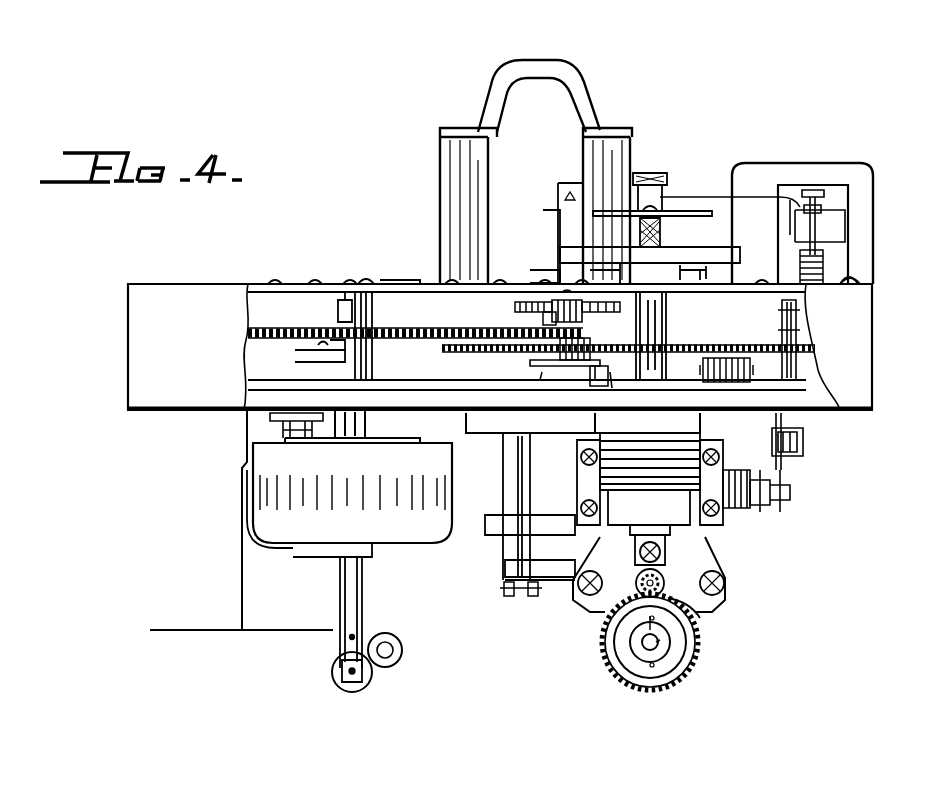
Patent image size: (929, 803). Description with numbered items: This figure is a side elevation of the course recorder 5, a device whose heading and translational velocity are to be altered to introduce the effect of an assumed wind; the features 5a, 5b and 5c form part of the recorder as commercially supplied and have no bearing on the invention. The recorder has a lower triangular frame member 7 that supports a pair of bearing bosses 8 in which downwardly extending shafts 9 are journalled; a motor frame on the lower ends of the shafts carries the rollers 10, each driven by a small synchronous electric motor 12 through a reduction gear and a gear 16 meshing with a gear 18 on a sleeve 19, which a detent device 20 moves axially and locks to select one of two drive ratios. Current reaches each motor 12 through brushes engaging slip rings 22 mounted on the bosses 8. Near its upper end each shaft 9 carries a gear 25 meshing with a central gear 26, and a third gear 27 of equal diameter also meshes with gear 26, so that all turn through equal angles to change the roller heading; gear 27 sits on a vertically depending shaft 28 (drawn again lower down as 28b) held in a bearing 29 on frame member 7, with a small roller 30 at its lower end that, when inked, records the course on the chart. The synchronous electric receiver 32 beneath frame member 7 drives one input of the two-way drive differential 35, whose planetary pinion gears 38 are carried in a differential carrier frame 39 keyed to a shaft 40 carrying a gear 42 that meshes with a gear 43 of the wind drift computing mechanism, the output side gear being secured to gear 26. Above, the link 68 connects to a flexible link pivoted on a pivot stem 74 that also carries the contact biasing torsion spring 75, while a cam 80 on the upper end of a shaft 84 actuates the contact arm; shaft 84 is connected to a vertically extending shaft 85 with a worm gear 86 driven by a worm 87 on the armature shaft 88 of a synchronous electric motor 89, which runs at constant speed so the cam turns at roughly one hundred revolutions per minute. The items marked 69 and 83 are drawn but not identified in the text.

The course recorder 5 is at (291, 270).
The commercial recorder structure 5a is at (590, 72).
The commercial recorder structure 5b is at (253, 477).
The commercial recorder structure 5c is at (408, 278).
The lower triangular frame member 7 is at (808, 405).
The bearing boss 8 is at (608, 433).
The downwardly extending shaft 9 is at (662, 316).
The roller 10 is at (700, 642).
The synchronous electric motor 12 is at (718, 552).
The gear 16 is at (662, 582).
The gear 18 is at (700, 618).
The sleeve 19 is at (660, 545).
The detent device 20 is at (656, 645).
The slip ring 22 is at (690, 450).
The gear 25 is at (686, 345).
The gear 26 is at (589, 345).
The third gear 27 is at (416, 322).
The vertically depending shaft 28 is at (340, 322).
The bar (lower) 28b is at (362, 590).
The bearing 29 is at (370, 428).
The small roller 30 is at (372, 676).
The synchronous electric receiver 32 is at (512, 482).
The two-way drive differential 35 is at (530, 370).
The planetary pinion gear 38 is at (605, 380).
The differential carrier frame 39 is at (522, 380).
The shaft 40 is at (582, 320).
The gear 42 is at (548, 320).
The gear 43 is at (516, 306).
The link 68 is at (684, 205).
The knob 69 is at (668, 180).
The pivot stem 74 is at (796, 250).
The contact biasing torsion spring 75 is at (823, 264).
The cam 80 is at (780, 235).
The cover 83 is at (875, 197).
The shaft 84 is at (782, 315).
The vertically extending shaft 85 is at (784, 372).
The worm gear 86 is at (803, 442).
The worm 87 is at (795, 460).
The armature shaft 88 is at (775, 457).
The synchronous electric motor 89 is at (785, 470).